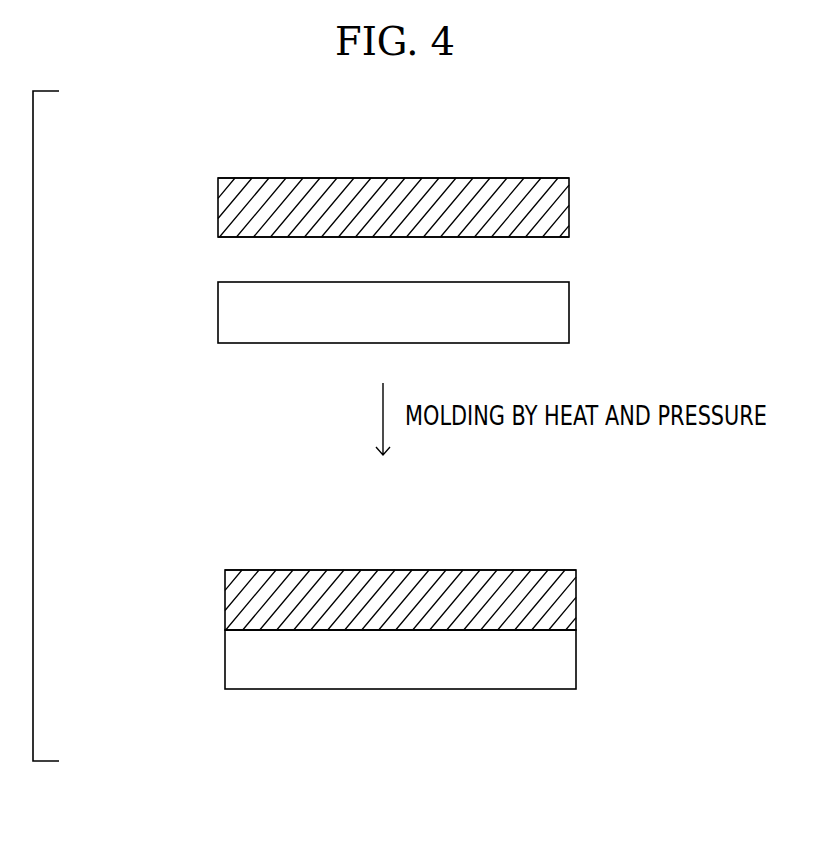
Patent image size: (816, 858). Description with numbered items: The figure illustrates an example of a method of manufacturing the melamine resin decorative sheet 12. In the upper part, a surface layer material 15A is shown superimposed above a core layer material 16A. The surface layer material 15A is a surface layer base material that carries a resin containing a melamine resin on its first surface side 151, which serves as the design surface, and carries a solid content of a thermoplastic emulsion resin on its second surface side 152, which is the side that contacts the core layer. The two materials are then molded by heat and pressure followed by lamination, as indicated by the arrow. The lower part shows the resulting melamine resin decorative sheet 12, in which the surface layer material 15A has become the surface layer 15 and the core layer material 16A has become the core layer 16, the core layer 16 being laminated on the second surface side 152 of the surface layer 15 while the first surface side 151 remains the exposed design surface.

The melamine resin decorative sheet 12 is at (432, 586).
The surface layer 15 is at (576, 593).
The surface layer material 15A is at (569, 197).
The core layer 16 is at (576, 657).
The core layer material 16A is at (569, 310).
The first surface side 151 is at (218, 178).
The second surface side 152 is at (218, 237).